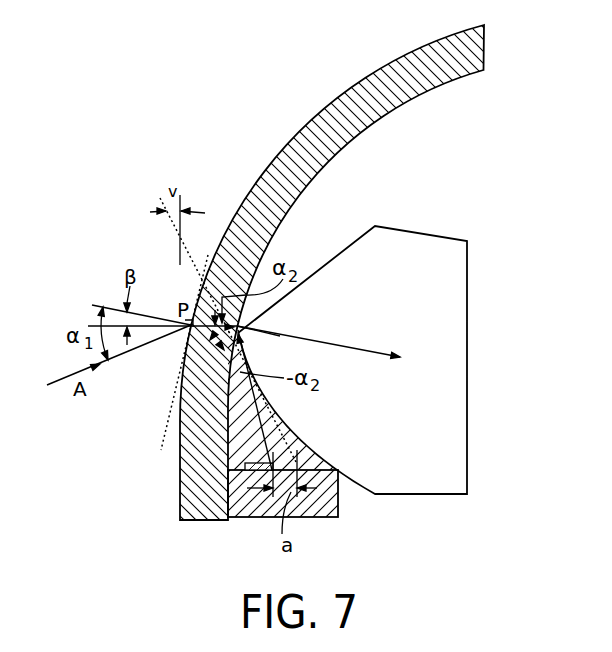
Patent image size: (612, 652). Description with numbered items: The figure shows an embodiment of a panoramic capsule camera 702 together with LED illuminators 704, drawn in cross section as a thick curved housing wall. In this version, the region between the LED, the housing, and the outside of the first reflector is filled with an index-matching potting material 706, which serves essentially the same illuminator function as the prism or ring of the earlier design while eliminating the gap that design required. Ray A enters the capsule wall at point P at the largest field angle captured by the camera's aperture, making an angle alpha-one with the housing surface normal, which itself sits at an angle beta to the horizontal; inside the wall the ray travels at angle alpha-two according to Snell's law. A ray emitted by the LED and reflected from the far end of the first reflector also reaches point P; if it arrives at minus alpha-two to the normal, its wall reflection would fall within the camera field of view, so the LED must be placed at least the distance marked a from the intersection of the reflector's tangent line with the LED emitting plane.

The panoramic capsule camera 702 is at (508, 297).
The LED illuminators 704 is at (414, 451).
The index-matching potting material 706 is at (243, 438).